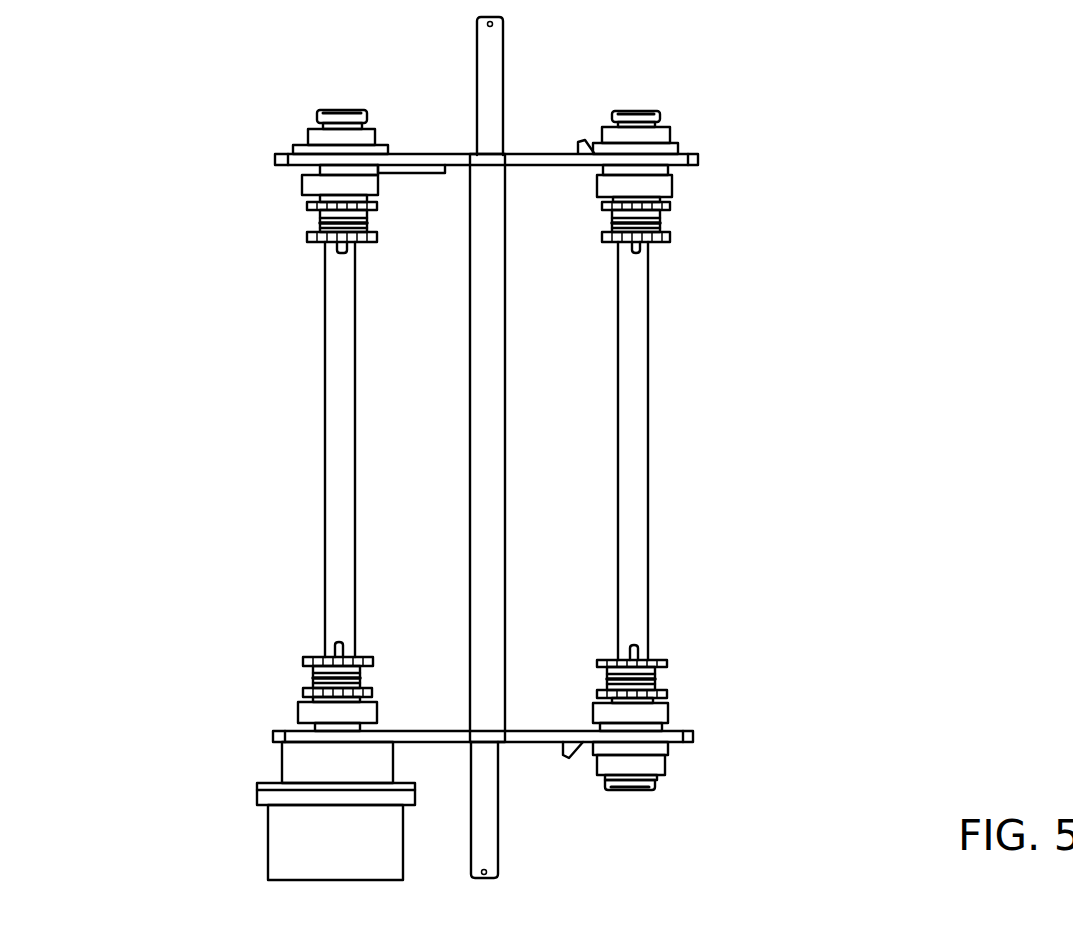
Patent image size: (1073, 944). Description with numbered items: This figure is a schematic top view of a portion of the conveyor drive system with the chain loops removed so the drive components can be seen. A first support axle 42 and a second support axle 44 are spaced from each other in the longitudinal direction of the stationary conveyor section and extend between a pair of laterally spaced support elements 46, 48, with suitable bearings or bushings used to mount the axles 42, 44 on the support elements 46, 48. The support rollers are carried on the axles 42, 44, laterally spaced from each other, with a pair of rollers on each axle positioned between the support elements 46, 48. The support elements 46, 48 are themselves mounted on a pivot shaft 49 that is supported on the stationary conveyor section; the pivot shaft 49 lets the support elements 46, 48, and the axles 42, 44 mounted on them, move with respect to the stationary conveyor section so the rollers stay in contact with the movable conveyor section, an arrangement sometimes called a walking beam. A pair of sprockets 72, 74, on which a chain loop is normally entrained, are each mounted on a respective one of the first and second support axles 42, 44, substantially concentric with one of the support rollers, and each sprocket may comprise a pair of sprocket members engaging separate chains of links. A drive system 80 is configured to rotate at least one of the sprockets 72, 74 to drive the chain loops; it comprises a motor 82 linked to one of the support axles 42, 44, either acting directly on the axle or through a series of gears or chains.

The first support axle 42 is at (342, 460).
The second support axle 44 is at (637, 443).
The support element 46 is at (537, 151).
The support element 48 is at (532, 740).
The pivot shaft 49 is at (492, 487).
The sprocket 72 is at (357, 658).
The sprocket 74 is at (655, 658).
The drive system 80 is at (240, 823).
The motor 82 is at (302, 848).